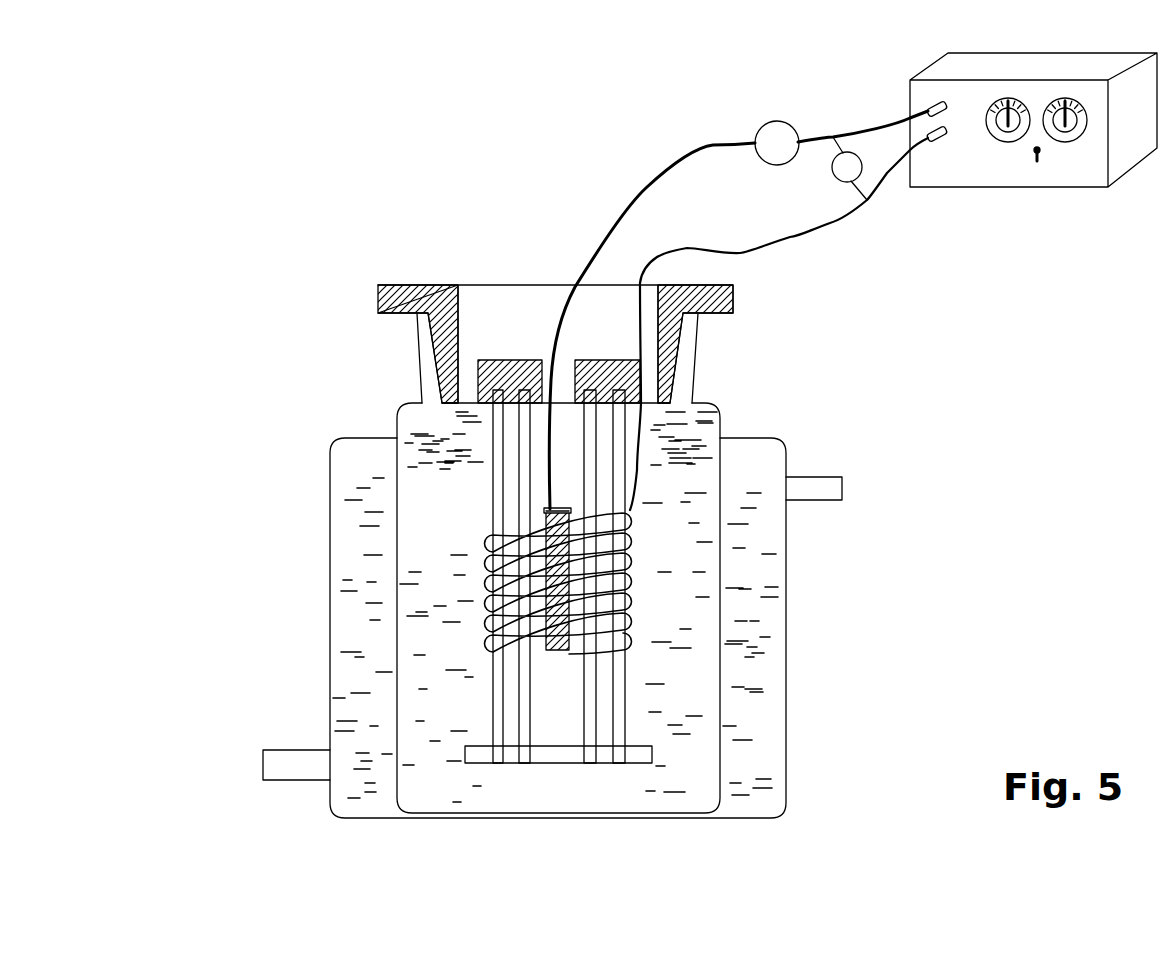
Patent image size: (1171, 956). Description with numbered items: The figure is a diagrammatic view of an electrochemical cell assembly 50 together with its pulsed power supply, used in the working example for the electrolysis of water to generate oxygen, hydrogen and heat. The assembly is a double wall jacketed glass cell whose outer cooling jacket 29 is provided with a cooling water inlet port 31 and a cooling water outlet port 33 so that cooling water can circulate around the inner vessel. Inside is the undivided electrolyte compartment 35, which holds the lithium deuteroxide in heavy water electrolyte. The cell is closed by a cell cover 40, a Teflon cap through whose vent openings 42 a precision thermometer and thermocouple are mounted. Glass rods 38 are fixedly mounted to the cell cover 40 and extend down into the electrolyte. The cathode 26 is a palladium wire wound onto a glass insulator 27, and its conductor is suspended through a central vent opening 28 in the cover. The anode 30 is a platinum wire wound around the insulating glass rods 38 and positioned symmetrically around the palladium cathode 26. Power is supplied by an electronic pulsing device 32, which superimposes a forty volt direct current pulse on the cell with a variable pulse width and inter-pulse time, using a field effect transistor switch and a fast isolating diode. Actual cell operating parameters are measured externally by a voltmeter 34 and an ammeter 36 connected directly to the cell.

The cathode 26 is at (546, 511).
The glass insulator 27 is at (569, 650).
The central vent opening 28 is at (547, 358).
The outer cooling jacket 29 is at (786, 633).
The anode 30 is at (485, 627).
The cooling water inlet port 31 is at (262, 765).
The electronic pulsing device 32 is at (900, 108).
The cooling water outlet port 33 is at (843, 490).
The voltmeter 34 is at (845, 185).
The undivided electrolyte compartment 35 is at (712, 588).
The ammeter 36 is at (755, 140).
The glass rods 38 is at (495, 752).
The cell cover 40 is at (400, 290).
The vent openings 42 is at (470, 365).
The electrochemical cell assembly 50 is at (315, 353).